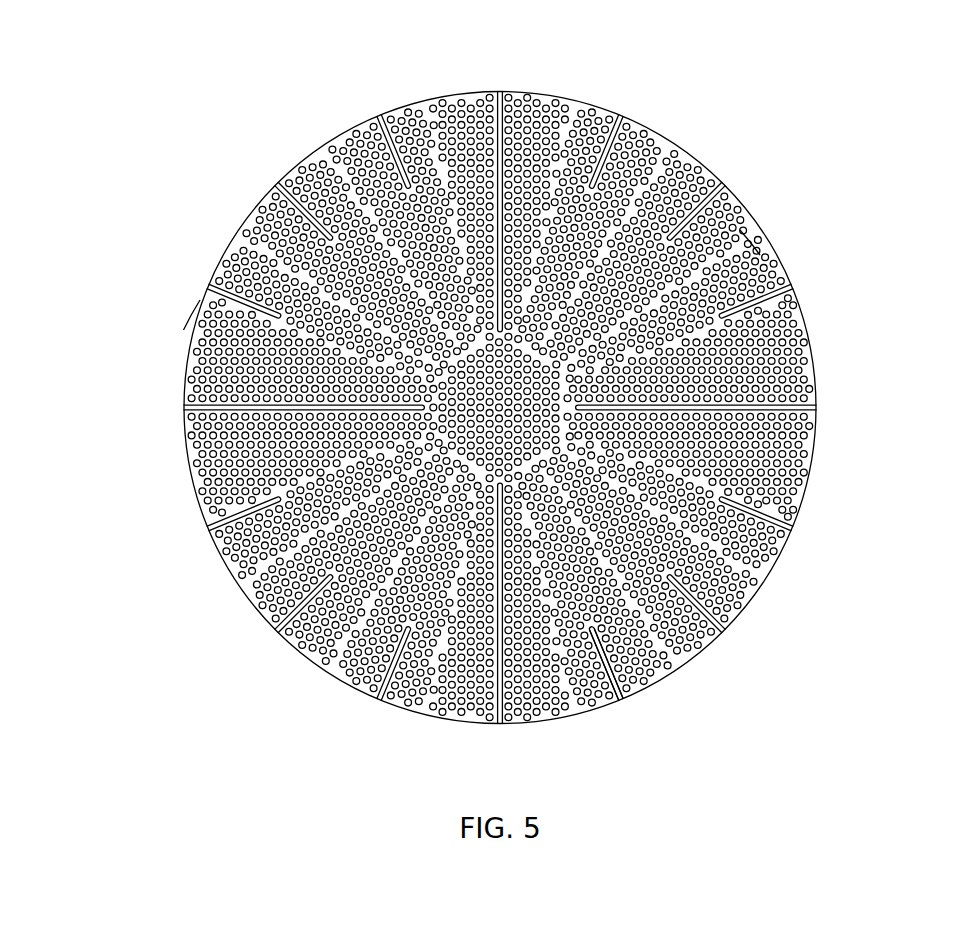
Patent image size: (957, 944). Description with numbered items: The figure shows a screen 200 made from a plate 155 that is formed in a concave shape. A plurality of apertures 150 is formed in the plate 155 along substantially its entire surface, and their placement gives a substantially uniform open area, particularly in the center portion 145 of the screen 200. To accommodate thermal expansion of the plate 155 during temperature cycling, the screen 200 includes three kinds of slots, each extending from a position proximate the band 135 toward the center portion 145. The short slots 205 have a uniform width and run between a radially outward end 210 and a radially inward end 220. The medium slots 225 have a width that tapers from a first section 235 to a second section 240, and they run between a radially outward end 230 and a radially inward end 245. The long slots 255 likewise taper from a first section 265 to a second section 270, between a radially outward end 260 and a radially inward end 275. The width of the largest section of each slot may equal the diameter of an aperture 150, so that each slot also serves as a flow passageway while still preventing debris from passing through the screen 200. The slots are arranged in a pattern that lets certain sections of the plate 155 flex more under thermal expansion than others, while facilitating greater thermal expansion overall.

The screen 200 is at (800, 247).
The apertures 150 is at (815, 378).
The band 135 is at (812, 488).
The plate 155 is at (780, 563).
The short slots 205 is at (617, 670).
The radially outward end 210 is at (612, 662).
The radially inward end 220 is at (587, 648).
The center portion 145 is at (243, 592).
The first section 265 is at (242, 420).
The radially outward end 260 is at (184, 408).
The long slots 255 is at (225, 400).
The second section 270 is at (322, 398).
The radially inward end 275 is at (421, 398).
The radially inward end 245 is at (607, 300).
The second section 240 is at (607, 290).
The medium slots 225 is at (677, 215).
The radially outward end 230 is at (720, 185).
The first section 235 is at (732, 225).